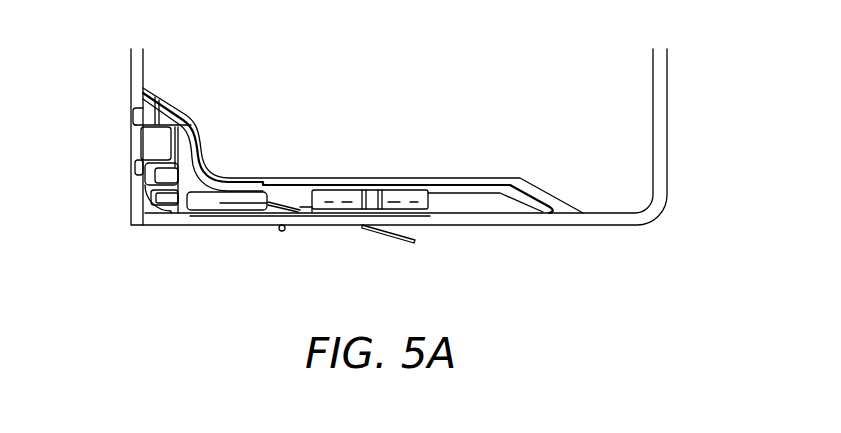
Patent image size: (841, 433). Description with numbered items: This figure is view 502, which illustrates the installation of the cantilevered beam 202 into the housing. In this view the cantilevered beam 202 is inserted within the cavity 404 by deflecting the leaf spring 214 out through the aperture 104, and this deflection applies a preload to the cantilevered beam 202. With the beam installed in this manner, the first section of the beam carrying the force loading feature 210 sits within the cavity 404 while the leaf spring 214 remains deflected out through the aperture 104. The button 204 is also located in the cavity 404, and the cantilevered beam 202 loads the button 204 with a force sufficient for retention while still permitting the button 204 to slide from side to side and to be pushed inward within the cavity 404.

The view 502 is at (777, 145).
The force loading feature 210 is at (150, 137).
The cantilevered beam 202 is at (188, 195).
The aperture 104 is at (326, 226).
The leaf spring 214 is at (388, 255).
The button 204 is at (470, 203).
The cavity 404 is at (523, 203).